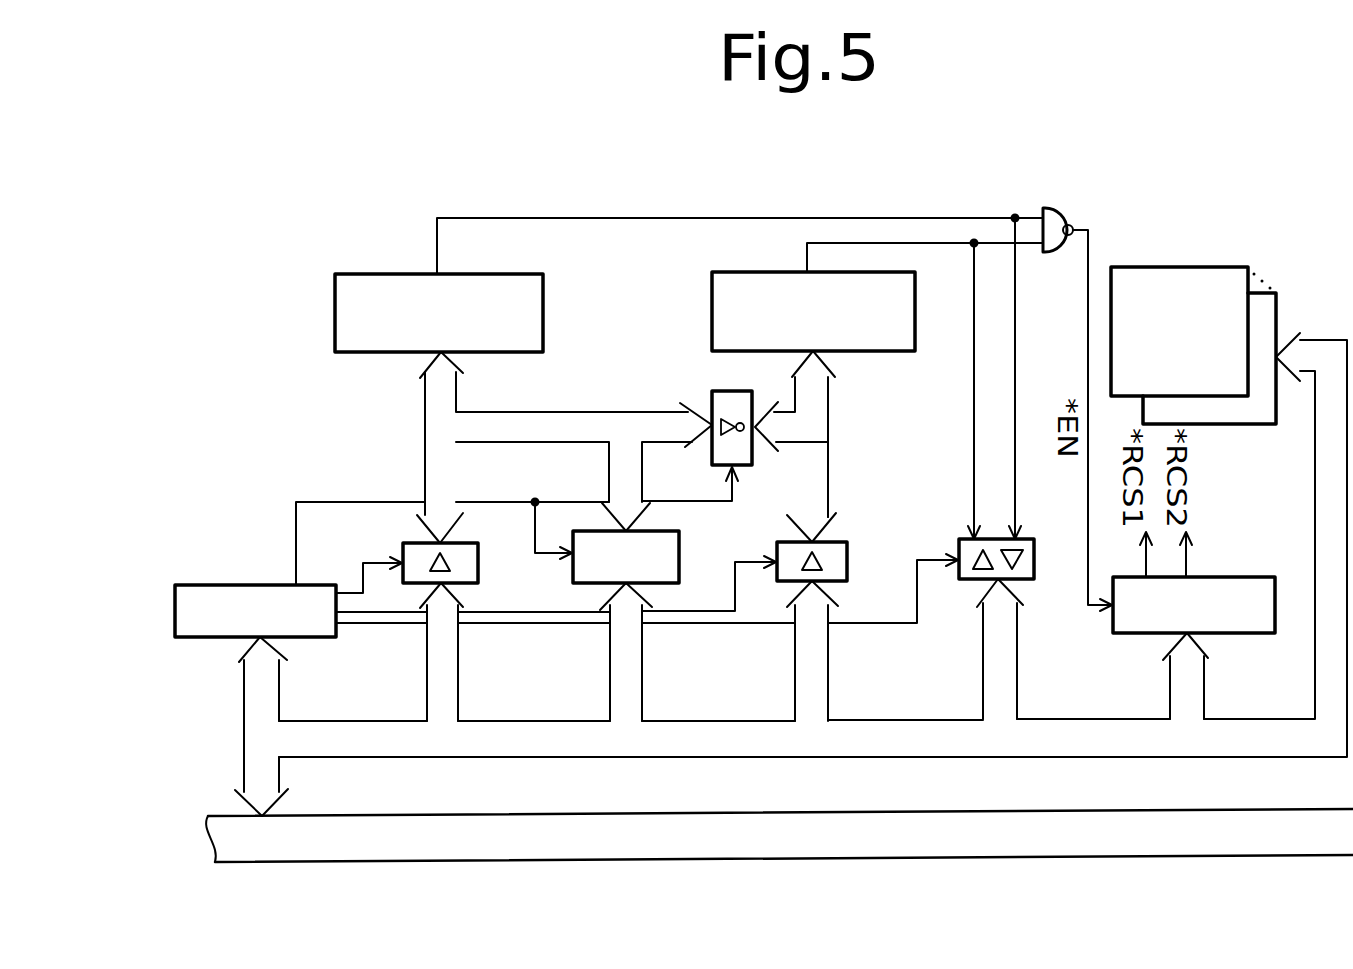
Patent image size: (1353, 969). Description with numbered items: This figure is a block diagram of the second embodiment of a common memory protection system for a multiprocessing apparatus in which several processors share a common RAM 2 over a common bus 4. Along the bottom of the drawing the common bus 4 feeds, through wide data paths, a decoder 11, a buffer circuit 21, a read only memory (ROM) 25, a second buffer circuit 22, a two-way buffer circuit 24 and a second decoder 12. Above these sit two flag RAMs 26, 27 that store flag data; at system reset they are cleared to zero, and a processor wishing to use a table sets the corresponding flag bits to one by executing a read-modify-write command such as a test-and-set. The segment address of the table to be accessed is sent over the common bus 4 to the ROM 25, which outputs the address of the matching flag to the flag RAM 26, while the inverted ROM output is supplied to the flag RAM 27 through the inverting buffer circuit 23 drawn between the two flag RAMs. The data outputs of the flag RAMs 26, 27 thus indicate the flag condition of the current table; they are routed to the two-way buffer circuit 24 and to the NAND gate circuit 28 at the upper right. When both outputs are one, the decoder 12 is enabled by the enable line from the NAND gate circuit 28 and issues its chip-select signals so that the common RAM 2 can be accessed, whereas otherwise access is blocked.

The common RAM 2 is at (1213, 267).
The common bus 4 is at (825, 814).
The decoder 11 is at (248, 585).
The decoder 12 is at (1258, 577).
The buffer circuit 21 is at (478, 567).
The buffer circuit 22 is at (847, 562).
The inverting buffer circuit 23 is at (725, 391).
The two-way buffer circuit 24 is at (1034, 560).
The read only memory (ROM) 25 is at (679, 562).
The flag RAM 26 is at (543, 318).
The flag RAM 27 is at (915, 323).
The NAND gate circuit 28 is at (1058, 208).